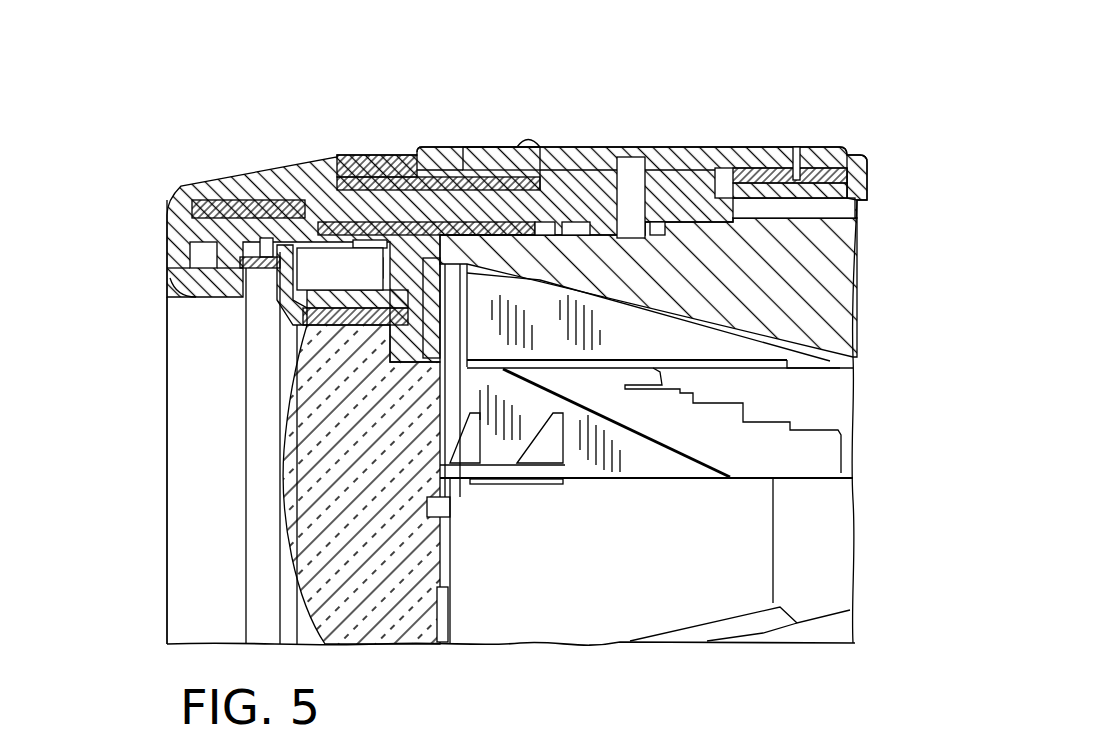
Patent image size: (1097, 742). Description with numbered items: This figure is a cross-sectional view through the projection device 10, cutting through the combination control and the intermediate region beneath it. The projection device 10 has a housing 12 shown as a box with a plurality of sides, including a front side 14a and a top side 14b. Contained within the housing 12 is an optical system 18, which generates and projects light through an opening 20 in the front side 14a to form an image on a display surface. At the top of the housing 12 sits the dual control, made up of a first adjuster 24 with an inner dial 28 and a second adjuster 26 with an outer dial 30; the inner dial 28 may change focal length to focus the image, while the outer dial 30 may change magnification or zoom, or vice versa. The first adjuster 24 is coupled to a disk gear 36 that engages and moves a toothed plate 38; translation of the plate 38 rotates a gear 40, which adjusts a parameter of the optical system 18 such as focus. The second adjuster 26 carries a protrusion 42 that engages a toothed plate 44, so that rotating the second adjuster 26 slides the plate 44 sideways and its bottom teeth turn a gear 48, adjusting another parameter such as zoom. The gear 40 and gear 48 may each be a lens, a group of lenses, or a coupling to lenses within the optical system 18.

The projection device 10 is at (812, 108).
The housing 12 is at (200, 183).
The front side 14a is at (168, 252).
The top side 14b is at (868, 152).
The optical system 18 is at (283, 508).
The opening 20 is at (197, 296).
The first adjuster 24 is at (731, 147).
The second adjuster 26 is at (440, 148).
The inner dial 28 is at (650, 147).
The outer dial 30 is at (455, 150).
The disk gear 36 is at (705, 220).
The toothed plate 38 is at (490, 237).
The gear 40 is at (354, 281).
The protrusion 42 is at (412, 183).
The toothed plate 44 is at (352, 210).
The gear 48 is at (282, 300).